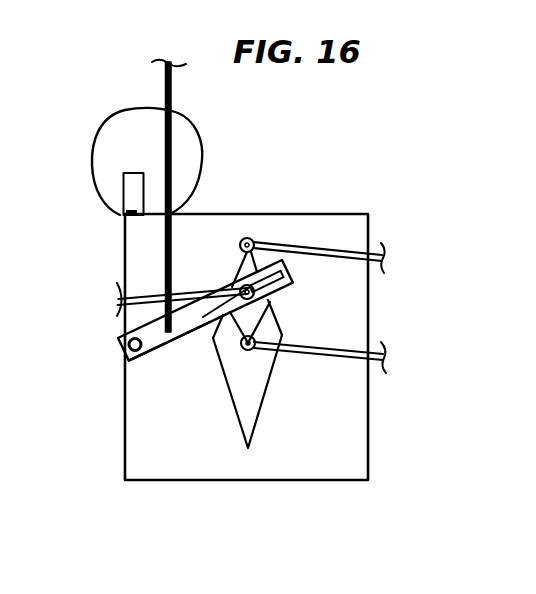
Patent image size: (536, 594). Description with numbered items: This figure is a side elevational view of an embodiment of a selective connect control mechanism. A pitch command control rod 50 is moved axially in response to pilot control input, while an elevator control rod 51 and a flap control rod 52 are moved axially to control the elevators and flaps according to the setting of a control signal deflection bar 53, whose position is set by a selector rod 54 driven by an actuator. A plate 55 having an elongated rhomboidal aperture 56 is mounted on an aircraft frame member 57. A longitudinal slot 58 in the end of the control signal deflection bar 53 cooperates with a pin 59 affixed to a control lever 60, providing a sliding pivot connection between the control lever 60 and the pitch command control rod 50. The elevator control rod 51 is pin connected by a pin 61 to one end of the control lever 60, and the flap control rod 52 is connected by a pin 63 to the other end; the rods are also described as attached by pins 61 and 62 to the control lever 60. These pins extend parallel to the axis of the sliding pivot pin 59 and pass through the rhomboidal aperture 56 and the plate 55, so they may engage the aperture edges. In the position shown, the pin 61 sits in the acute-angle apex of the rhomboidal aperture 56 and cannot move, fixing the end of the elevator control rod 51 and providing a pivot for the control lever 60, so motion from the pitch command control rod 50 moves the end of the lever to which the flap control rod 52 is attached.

The pitch command control rod 50 is at (138, 296).
The elevator control rod 51 is at (382, 245).
The flap control rod 52 is at (380, 364).
The control signal deflection bar 53 is at (153, 351).
The selector rod 54 is at (165, 87).
The plate 55 is at (337, 481).
The rhomboidal aperture 56 is at (242, 437).
The aircraft frame member 57 is at (92, 140).
The longitudinal slot 58 is at (203, 327).
The pin 59 is at (263, 302).
The control lever 60 is at (257, 352).
The pin 61 is at (247, 237).
The pin 62 is at (127, 344).
The pin 63 is at (228, 385).